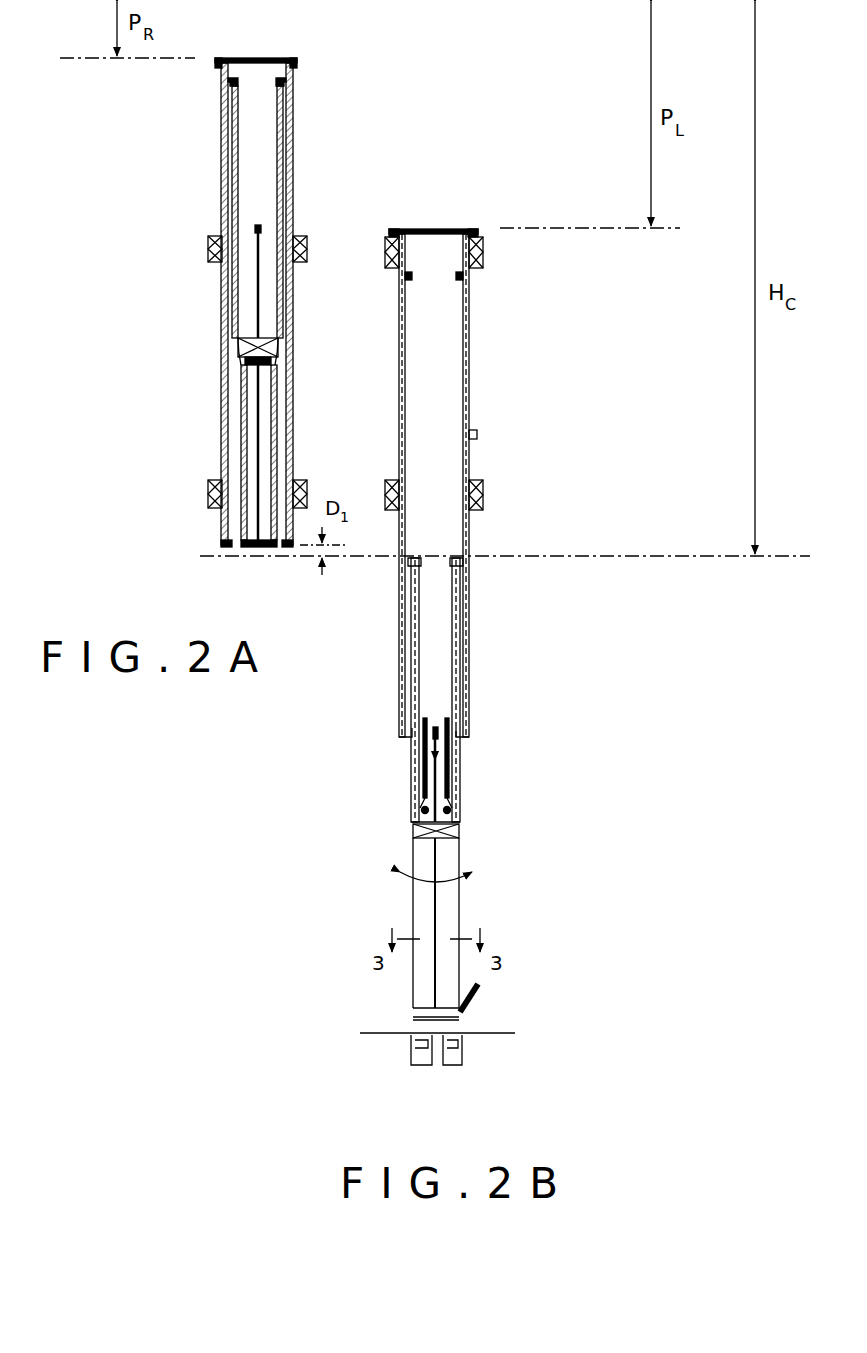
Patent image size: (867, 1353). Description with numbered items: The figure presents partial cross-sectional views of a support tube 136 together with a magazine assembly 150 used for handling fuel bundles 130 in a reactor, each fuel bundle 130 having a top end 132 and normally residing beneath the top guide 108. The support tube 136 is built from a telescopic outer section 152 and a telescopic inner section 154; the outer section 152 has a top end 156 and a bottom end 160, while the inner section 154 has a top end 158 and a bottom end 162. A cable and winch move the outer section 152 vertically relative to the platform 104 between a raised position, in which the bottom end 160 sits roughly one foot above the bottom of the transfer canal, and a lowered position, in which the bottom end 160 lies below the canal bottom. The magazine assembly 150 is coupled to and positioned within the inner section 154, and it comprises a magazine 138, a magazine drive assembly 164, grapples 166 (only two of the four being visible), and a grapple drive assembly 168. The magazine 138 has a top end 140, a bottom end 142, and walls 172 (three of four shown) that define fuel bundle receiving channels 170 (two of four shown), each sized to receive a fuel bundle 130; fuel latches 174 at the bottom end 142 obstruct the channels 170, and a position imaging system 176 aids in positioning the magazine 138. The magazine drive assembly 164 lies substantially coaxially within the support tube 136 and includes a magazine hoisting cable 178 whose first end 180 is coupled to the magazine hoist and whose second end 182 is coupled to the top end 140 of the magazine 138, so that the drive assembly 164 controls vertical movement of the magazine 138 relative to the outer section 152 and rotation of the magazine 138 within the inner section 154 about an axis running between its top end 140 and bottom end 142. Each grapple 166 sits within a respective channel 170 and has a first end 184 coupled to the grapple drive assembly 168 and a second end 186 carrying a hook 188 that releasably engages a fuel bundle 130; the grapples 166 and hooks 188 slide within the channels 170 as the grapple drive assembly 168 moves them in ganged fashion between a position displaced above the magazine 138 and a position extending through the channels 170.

In FIG. 2A, the platform 104 is at (238, 58).
In FIG. 2B, the platform 104 is at (428, 229).
In FIG. 2B, the top guide 108 is at (390, 1035).
In FIG. 2B, the fuel bundle 130 is at (452, 1060).
In FIG. 2B, the top end 132 is at (470, 1040).
In FIG. 2A, the support tube 136 is at (226, 70).
In FIG. 2B, the support tube 136 is at (470, 318).
In FIG. 2A, the magazine 138 is at (255, 410).
In FIG. 2B, the magazine 138 is at (412, 905).
In FIG. 2A, the top end 140 is at (278, 388).
In FIG. 2B, the top end 140 is at (460, 840).
In FIG. 2A, the bottom end 142 is at (246, 545).
In FIG. 2B, the bottom end 142 is at (412, 1013).
In FIG. 2A, the magazine assembly 150 is at (246, 316).
In FIG. 2B, the magazine assembly 150 is at (440, 695).
In FIG. 2A, the telescopic outer section 152 is at (290, 80).
In FIG. 2B, the telescopic outer section 152 is at (470, 395).
In FIG. 2A, the telescopic inner section 154 is at (275, 130).
In FIG. 2B, the telescopic inner section 154 is at (468, 630).
In FIG. 2A, the top end 156 is at (292, 58).
In FIG. 2B, the top end 156 is at (478, 229).
In FIG. 2A, the top end 158 is at (240, 110).
In FIG. 2B, the top end 158 is at (405, 558).
In FIG. 2A, the bottom end 160 is at (222, 542).
In FIG. 2B, the bottom end 160 is at (462, 735).
In FIG. 2A, the bottom end 162 is at (240, 350).
In FIG. 2B, the bottom end 162 is at (460, 835).
In FIG. 2A, the magazine drive assembly 164 is at (262, 214).
In FIG. 2B, the magazine drive assembly 164 is at (425, 755).
In FIG. 2B, the grapple 166 is at (450, 775).
In FIG. 2B, the grapple drive assembly 168 is at (437, 712).
In FIG. 2A, the fuel bundle receiving channel 170 is at (252, 400).
In FIG. 2B, the fuel bundle receiving channel 170 is at (444, 920).
In FIG. 2A, the wall 172 is at (276, 450).
In FIG. 2B, the wall 172 is at (462, 900).
In FIG. 2B, the fuel latch 174 is at (430, 1010).
In FIG. 2B, the position imaging system 176 is at (472, 1005).
In FIG. 2A, the magazine hoisting cable 178 is at (255, 290).
In FIG. 2B, the magazine hoisting cable 178 is at (450, 778).
In FIG. 2A, the first end 180 is at (254, 230).
In FIG. 2B, the first end 180 is at (440, 745).
In FIG. 2A, the second end 182 is at (275, 338).
In FIG. 2B, the second end 182 is at (415, 835).
In FIG. 2B, the first end 184 is at (450, 720).
In FIG. 2B, the second end 186 is at (455, 795).
In FIG. 2B, the hook 188 is at (455, 810).